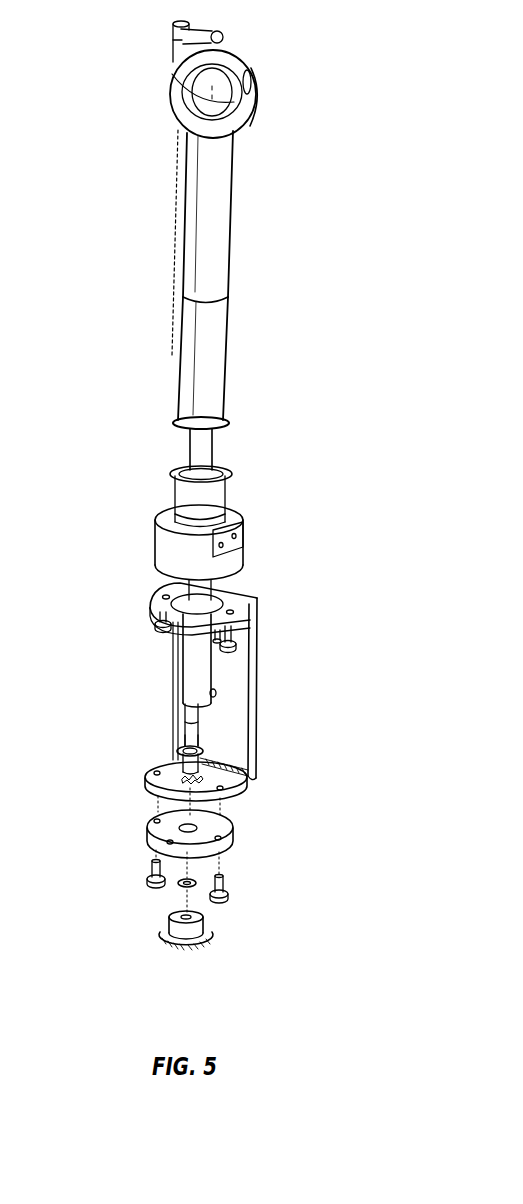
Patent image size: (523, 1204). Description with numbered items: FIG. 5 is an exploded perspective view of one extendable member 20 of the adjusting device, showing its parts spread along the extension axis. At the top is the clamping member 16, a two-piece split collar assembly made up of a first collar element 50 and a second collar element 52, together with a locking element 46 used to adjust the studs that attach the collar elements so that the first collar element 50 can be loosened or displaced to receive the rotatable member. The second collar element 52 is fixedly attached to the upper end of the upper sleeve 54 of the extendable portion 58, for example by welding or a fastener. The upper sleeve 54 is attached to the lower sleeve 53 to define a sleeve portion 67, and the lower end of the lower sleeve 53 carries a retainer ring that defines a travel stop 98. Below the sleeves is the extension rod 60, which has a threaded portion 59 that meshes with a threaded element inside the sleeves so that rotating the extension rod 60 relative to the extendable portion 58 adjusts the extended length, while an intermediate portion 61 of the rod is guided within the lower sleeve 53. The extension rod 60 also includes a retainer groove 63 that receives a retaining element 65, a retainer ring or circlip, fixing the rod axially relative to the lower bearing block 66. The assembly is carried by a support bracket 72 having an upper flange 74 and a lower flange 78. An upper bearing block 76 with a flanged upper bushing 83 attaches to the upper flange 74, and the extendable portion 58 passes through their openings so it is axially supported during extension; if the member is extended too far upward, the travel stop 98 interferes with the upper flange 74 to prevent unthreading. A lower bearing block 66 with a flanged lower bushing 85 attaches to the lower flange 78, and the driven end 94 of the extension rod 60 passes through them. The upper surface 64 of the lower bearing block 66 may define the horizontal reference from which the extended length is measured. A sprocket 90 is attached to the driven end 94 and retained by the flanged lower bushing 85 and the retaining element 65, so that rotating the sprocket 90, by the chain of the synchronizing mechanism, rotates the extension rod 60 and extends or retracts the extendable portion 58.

The clamping member 16 is at (144, 82).
The extendable member 20 is at (60, 315).
The locking element 46 is at (208, 30).
The first collar element 50 is at (242, 66).
The second collar element 52 is at (252, 108).
The lower sleeve 53 is at (228, 342).
The upper sleeve 54 is at (233, 176).
The extendable portion 58 is at (288, 262).
The threaded portion 59 is at (190, 452).
The extension rod 60 is at (182, 686).
The intermediate portion 61 is at (210, 692).
The retainer groove 63 is at (200, 728).
The upper surface 64 is at (221, 831).
The retaining element 65 is at (196, 884).
The lower bearing block 66 is at (147, 829).
The sleeve portion 67 is at (164, 285).
The support bracket 72 is at (250, 690).
The upper flange 74 is at (150, 601).
The upper bearing block 76 is at (243, 555).
The lower flange 78 is at (149, 776).
The flanged upper bushing 83 is at (226, 489).
The flanged lower bushing 85 is at (178, 751).
The sprocket 90 is at (163, 928).
The driven end 94 is at (154, 700).
The travel stop 98 is at (232, 419).